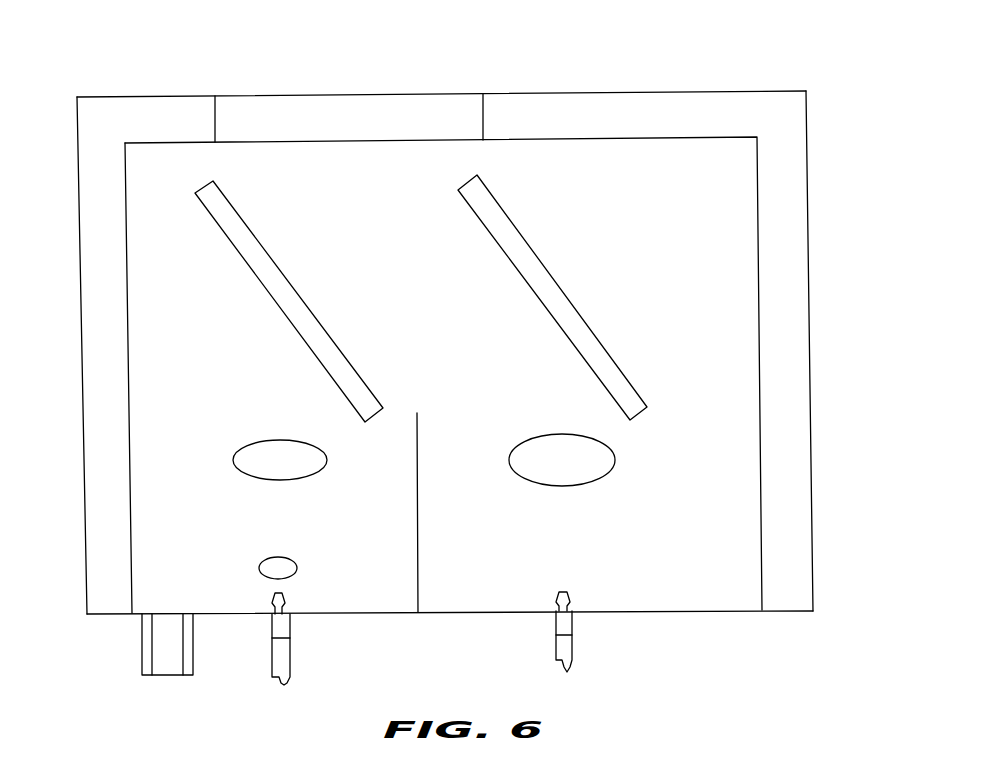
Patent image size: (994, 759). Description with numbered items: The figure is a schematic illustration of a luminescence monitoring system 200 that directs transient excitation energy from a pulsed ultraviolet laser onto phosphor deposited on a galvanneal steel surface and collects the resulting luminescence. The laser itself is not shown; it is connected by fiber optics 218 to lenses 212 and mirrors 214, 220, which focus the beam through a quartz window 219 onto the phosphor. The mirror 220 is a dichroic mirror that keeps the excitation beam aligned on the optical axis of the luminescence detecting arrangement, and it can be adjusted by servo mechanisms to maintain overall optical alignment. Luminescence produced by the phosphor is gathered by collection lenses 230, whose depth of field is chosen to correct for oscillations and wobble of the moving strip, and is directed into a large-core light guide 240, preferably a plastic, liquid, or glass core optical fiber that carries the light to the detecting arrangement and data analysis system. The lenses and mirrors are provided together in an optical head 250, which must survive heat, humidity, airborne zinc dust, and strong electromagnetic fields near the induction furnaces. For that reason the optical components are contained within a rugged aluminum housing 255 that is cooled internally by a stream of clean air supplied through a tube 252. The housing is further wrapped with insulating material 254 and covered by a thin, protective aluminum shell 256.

The luminescence monitoring system 200 is at (447, 362).
The optical head 250 is at (807, 91).
The quartz window 219 is at (405, 110).
The insulating material 254 is at (98, 342).
The protective aluminum shell 256 is at (810, 347).
The aluminum housing 255 is at (700, 140).
The dichroic mirror 220 is at (266, 290).
The mirror 214 is at (572, 303).
The collection lenses 230 is at (262, 515).
The lenses 212 is at (613, 470).
The tube 252 is at (142, 675).
The light guide 240 is at (290, 660).
The fiber optics 218 is at (572, 655).